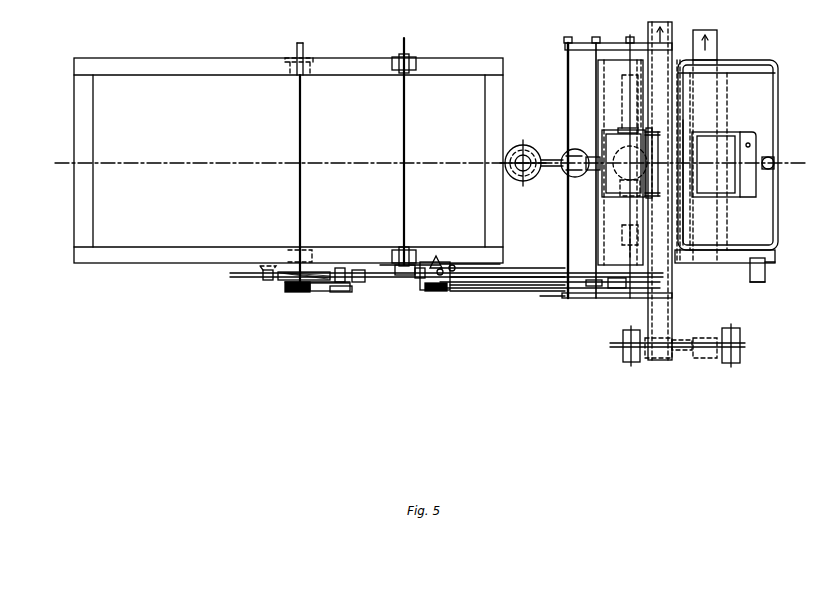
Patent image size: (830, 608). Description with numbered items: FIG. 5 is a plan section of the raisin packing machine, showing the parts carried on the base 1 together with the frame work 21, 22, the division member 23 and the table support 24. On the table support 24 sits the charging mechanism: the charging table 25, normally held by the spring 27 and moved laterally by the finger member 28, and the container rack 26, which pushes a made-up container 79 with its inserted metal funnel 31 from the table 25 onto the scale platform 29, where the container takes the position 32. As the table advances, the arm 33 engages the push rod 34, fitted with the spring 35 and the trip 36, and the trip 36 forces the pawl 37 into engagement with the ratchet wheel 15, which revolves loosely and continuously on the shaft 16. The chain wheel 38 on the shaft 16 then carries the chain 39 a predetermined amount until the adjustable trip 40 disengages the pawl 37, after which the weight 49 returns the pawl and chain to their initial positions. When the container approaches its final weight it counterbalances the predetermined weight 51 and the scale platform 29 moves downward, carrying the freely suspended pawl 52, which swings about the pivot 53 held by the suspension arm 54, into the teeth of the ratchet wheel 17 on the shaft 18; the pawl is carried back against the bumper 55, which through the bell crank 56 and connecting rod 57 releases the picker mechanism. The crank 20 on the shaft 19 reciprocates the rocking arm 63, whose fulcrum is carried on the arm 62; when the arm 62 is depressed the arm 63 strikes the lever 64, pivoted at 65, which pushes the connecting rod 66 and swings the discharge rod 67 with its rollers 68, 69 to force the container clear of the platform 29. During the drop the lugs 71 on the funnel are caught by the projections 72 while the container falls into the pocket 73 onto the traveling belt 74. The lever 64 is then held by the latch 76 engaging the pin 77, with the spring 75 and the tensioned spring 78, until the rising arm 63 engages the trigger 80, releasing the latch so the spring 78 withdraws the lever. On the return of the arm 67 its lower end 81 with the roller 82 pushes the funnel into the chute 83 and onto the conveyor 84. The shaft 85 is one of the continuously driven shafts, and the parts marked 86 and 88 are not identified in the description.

The base 1 is at (266, 58).
The ratchet wheel 15 is at (282, 280).
The shaft 16 is at (297, 196).
The ratchet wheel 17 is at (650, 298).
The shaft 18 is at (626, 246).
The shaft 19 is at (402, 216).
The crank 20 is at (400, 258).
The frame work 21 is at (637, 91).
The frame work 22 is at (728, 155).
The division member 23 is at (684, 219).
The table support 24 is at (768, 268).
The charging table 25 is at (690, 243).
The container rack 26 is at (706, 126).
The spring 27 is at (776, 262).
The finger member 28 is at (775, 160).
The scale platform 29 is at (658, 196).
The metal funnel 31 is at (622, 133).
The container 32 is at (626, 196).
The arm 33 is at (750, 277).
The push rod 34 is at (366, 271).
The spring 35 is at (358, 282).
The trip 36 is at (340, 283).
The pawl 37 is at (340, 292).
The chain wheel 38 is at (295, 292).
The chain 39 is at (322, 292).
The trip 40 is at (262, 276).
The weight 49 is at (288, 284).
The predetermined weight 51 is at (521, 152).
The pawl 52 is at (618, 289).
The pivot 53 is at (592, 287).
The suspension arm 54 is at (628, 225).
The bumper 55 is at (500, 288).
The bell crank 56 is at (435, 290).
The connecting rod 57 is at (445, 290).
The arm 62 is at (403, 275).
The rocking arm 63 is at (420, 270).
The lever 64 is at (442, 270).
The pivot 65 is at (437, 257).
The connecting rod 66 is at (530, 282).
The discharge rod 67 is at (563, 46).
The roller 68 is at (567, 76).
The roller 69 is at (595, 76).
The lugs 71 is at (626, 128).
The projections 72 is at (650, 135).
The pocket 73 is at (690, 97).
The traveling belt 74 is at (658, 358).
The spring 75 is at (530, 285).
The latch 76 is at (478, 286).
The pin 77 is at (455, 282).
The spring 78 is at (418, 268).
The container 79 is at (732, 140).
The trigger 80 is at (455, 267).
The lower end of discharge rod 81 is at (672, 46).
The roller 82 is at (653, 95).
The chute 83 is at (690, 97).
The conveyor 84 is at (725, 360).
The shaft 85 is at (682, 352).
The rail 86 is at (490, 270).
The rod 88 is at (629, 44).